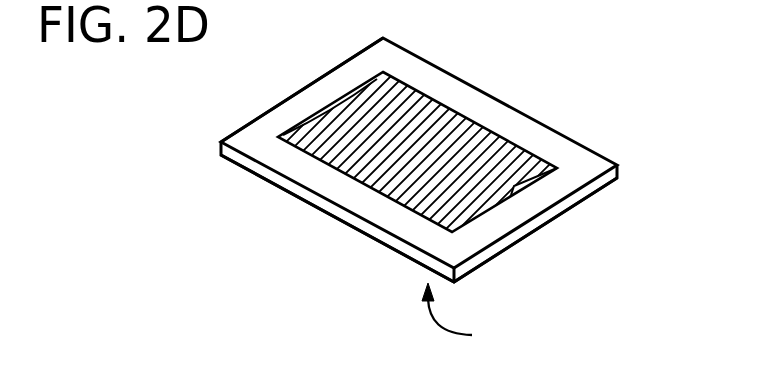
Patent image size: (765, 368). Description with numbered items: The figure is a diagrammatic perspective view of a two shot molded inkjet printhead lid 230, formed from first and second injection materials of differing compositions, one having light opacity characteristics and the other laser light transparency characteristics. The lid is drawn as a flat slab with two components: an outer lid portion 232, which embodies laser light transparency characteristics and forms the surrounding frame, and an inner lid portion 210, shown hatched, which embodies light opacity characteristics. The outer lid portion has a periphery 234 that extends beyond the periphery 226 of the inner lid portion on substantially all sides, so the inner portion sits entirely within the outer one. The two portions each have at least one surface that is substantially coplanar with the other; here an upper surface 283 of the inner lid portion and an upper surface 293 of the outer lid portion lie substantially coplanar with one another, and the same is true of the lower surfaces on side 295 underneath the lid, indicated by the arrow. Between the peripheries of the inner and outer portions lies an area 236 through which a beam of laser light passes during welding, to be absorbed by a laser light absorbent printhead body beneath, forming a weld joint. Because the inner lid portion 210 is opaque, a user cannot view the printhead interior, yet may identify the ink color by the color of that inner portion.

The inner lid portion 210 is at (455, 122).
The periphery of the inner lid portion 226 is at (405, 83).
The inkjet printhead lid 230 is at (618, 170).
The outer lid portion 232 is at (522, 132).
The periphery of the outer lid portion 234 is at (298, 90).
The area between the peripheries 236 is at (505, 222).
The upper surface of the inner lid portion 283 is at (430, 153).
The upper surface of the outer lid portion 293 is at (352, 196).
The side 295 is at (471, 317).